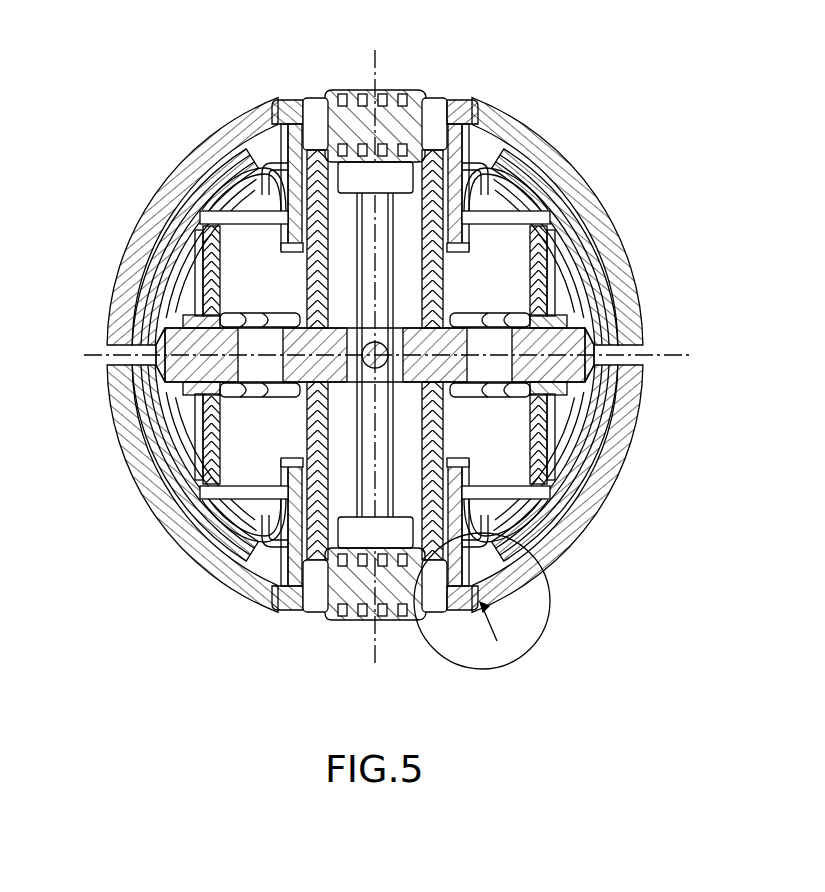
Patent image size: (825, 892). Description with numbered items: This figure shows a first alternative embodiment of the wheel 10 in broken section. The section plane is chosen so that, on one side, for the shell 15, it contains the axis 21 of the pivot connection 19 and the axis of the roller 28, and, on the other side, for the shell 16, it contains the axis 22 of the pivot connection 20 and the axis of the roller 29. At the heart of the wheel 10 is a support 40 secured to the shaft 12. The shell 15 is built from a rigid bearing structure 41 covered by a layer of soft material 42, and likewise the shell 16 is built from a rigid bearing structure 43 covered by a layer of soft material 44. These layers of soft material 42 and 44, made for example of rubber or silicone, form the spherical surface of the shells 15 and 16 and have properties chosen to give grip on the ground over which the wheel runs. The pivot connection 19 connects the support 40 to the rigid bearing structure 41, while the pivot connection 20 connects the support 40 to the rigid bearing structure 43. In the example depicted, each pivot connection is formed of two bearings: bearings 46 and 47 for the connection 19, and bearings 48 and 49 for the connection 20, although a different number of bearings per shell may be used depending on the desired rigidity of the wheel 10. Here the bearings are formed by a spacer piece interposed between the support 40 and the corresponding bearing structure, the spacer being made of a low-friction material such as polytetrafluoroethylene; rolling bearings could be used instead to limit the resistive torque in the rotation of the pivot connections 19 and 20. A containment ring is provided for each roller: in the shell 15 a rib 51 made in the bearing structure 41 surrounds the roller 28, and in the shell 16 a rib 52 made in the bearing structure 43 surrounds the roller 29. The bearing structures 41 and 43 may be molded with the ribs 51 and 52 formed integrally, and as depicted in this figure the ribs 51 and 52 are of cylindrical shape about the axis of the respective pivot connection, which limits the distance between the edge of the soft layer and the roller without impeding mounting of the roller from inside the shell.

The wheel 10 is at (712, 196).
The shaft 12 is at (356, 385).
The shell 15 is at (548, 162).
The shell 16 is at (612, 470).
The pivot connection 19 is at (181, 81).
The pivot connection 20 is at (203, 629).
The axis 21 is at (372, 64).
The axis 22 is at (376, 648).
The roller 28 is at (398, 90).
The roller 29 is at (358, 622).
The support 40 is at (307, 343).
The rigid bearing structure 41 is at (560, 218).
The layer of soft material 42 is at (142, 266).
The rigid bearing structure 43 is at (582, 516).
The layer of soft material 44 is at (167, 497).
The bearing 46 is at (300, 203).
The bearing 47 is at (205, 222).
The bearing 48 is at (300, 510).
The bearing 49 is at (205, 500).
The rib 51 is at (282, 127).
The rib 52 is at (287, 592).